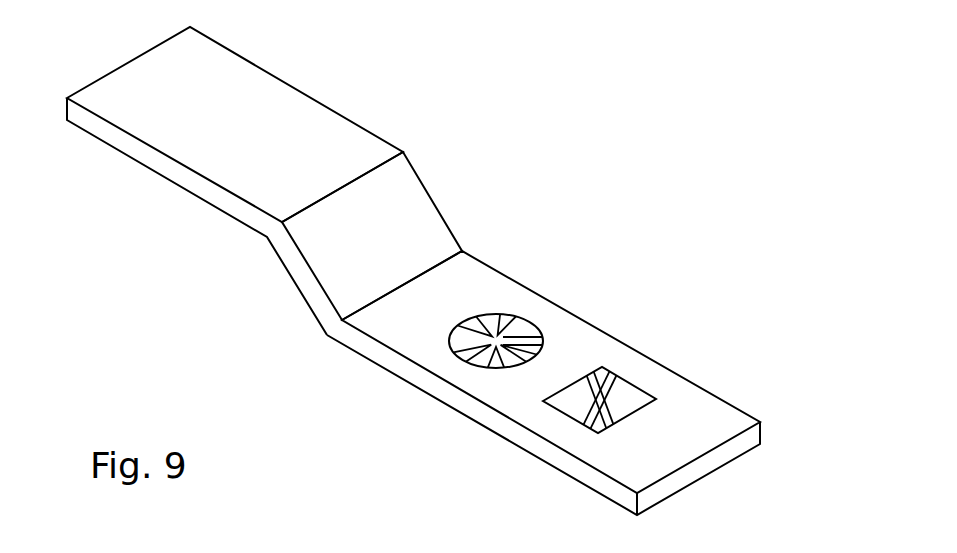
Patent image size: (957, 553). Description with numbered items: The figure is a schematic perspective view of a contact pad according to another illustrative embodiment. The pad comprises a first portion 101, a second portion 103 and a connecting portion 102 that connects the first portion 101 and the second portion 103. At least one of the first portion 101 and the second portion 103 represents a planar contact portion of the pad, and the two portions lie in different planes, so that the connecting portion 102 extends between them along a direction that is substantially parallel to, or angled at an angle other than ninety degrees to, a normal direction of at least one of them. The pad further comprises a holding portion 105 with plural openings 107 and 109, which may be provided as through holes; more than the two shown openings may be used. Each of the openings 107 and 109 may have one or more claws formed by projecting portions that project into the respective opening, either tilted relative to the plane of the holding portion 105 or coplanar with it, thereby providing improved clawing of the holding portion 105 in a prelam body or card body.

The first portion 101 is at (243, 120).
The connecting portion 102 is at (400, 240).
The second portion 103 is at (412, 314).
The holding portion 105 is at (686, 452).
The opening 107 is at (551, 316).
The opening 109 is at (642, 370).